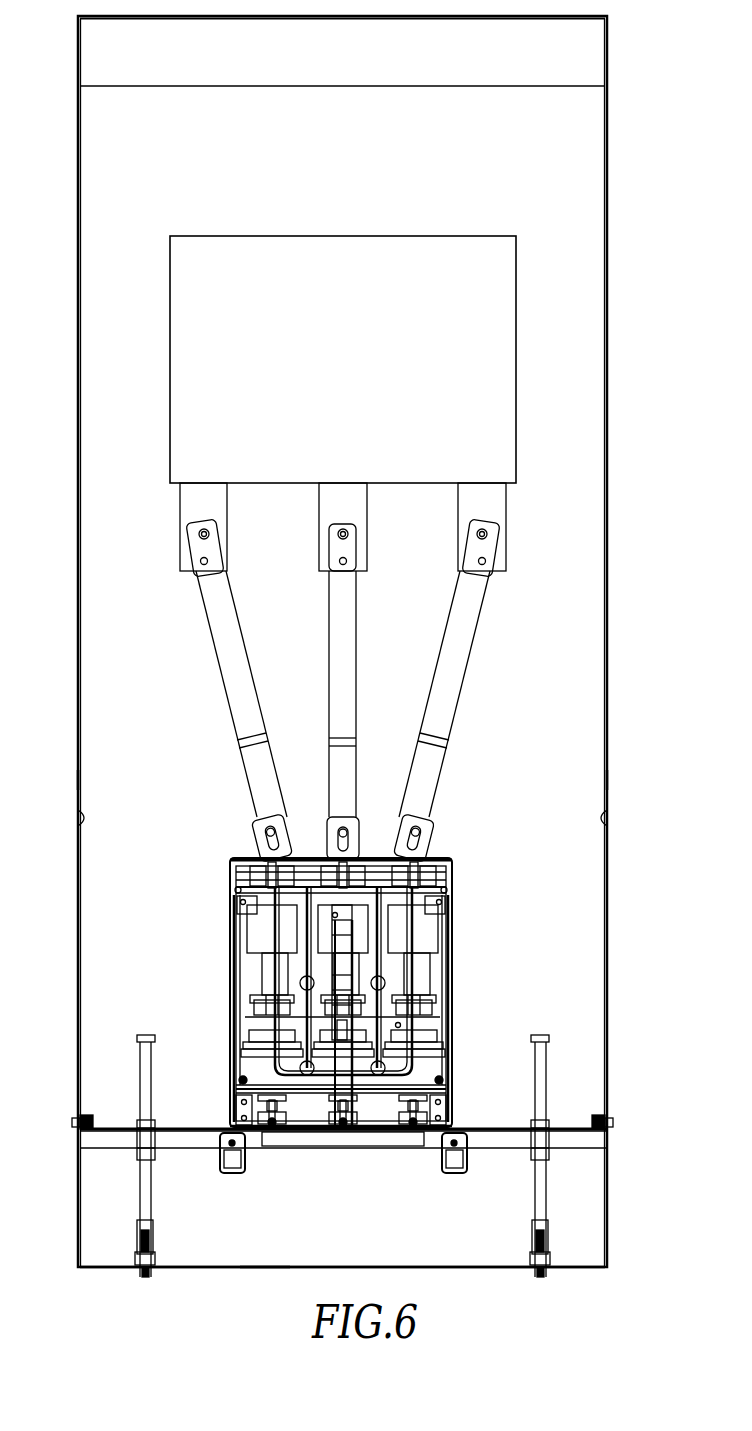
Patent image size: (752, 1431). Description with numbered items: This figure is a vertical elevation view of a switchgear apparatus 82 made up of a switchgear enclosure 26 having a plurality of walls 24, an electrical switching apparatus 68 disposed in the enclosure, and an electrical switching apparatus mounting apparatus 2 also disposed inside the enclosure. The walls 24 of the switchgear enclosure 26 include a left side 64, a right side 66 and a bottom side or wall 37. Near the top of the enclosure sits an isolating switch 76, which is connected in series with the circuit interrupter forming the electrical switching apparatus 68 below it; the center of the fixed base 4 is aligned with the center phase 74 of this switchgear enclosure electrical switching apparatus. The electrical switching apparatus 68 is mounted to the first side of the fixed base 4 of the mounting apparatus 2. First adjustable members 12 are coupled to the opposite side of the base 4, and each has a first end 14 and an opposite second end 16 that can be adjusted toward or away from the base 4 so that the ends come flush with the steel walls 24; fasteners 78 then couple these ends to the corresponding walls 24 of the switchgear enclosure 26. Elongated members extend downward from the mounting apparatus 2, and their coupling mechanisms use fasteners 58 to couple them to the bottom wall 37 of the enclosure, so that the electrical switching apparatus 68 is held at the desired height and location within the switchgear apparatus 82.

The electrical switching apparatus mounting apparatus 2 is at (486, 1114).
The base 4 is at (344, 1145).
The first adjustable members 12 is at (502, 1142).
The first end 14 is at (610, 1143).
The opposite second end 16 is at (76, 1143).
The walls 24 is at (80, 779).
The switchgear enclosure 26 is at (620, 563).
The wall 37 is at (443, 1264).
The fasteners 58 is at (143, 1279).
The left side 64 is at (79, 824).
The right side 66 is at (606, 824).
The electrical switching apparatus 68 is at (470, 914).
The center phase 74 is at (340, 661).
The isolating switch 76 is at (516, 367).
The fasteners 78 is at (66, 1122).
The switchgear apparatus 82 is at (675, 999).